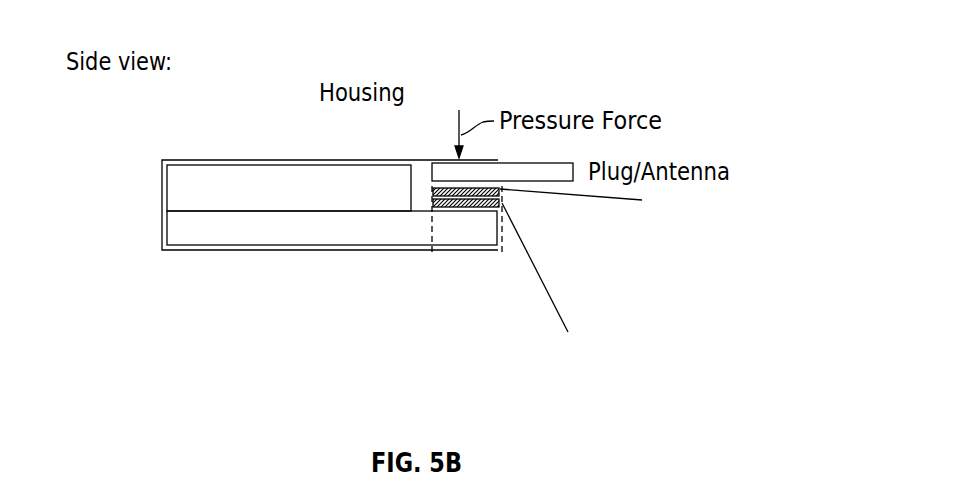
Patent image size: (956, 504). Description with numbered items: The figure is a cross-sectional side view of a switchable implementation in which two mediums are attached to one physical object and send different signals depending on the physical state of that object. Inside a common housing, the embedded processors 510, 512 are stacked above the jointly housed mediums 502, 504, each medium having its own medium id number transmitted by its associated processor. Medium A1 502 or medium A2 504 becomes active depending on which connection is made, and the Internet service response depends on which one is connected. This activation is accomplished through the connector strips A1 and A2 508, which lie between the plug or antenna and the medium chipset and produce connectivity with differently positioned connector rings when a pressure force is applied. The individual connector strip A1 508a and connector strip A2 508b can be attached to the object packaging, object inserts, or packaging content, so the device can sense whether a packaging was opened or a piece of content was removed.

The processor 510 is at (224, 185).
The processor 512 is at (162, 181).
The medium A1 502 is at (267, 235).
The medium A2 504 is at (162, 231).
The connector strips A1 and A2 508 is at (644, 295).
The connector strip A1 508a is at (500, 191).
The connector strip A2 508b is at (430, 261).